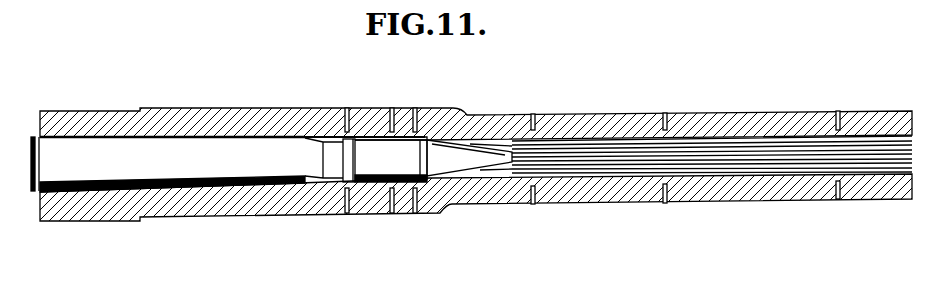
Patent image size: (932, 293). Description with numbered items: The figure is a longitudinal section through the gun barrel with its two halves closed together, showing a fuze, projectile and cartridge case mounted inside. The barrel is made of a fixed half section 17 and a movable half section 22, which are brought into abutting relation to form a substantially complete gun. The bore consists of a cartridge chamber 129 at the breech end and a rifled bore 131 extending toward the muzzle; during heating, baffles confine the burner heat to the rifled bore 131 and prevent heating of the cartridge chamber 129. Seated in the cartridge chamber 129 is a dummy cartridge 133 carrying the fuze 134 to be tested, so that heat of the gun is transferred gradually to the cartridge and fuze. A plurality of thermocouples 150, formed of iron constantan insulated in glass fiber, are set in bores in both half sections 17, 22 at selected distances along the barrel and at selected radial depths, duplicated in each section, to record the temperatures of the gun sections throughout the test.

The half section 17 is at (480, 114).
The half section 22 is at (482, 204).
The cartridge chamber 129 is at (203, 137).
The rifled bore 131 is at (593, 135).
The dummy cartridge 133 is at (213, 181).
The fuze 134 is at (473, 172).
The thermocouples 150 is at (415, 108).